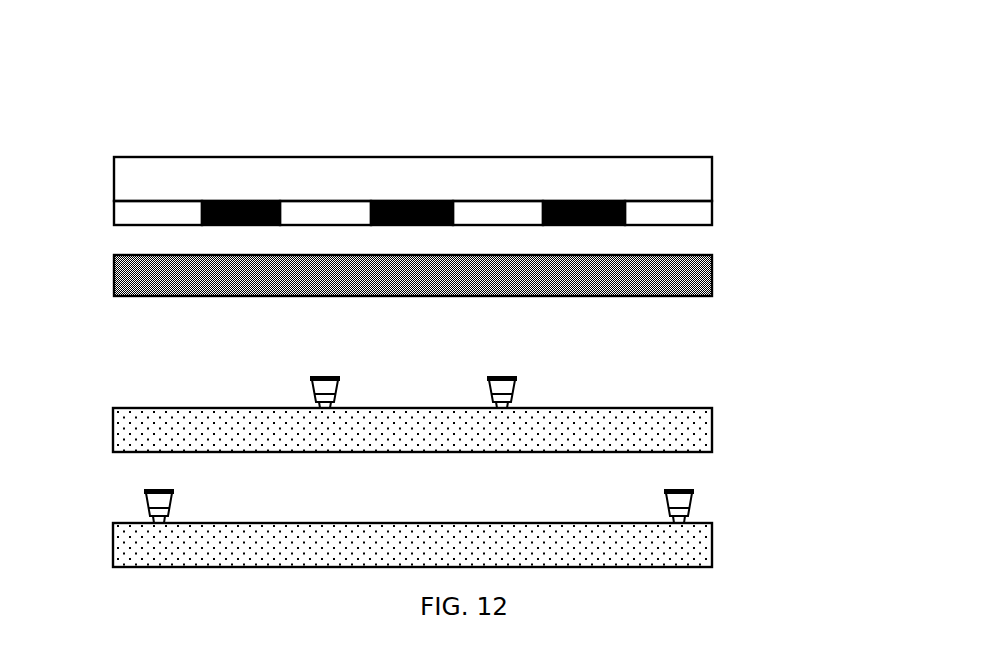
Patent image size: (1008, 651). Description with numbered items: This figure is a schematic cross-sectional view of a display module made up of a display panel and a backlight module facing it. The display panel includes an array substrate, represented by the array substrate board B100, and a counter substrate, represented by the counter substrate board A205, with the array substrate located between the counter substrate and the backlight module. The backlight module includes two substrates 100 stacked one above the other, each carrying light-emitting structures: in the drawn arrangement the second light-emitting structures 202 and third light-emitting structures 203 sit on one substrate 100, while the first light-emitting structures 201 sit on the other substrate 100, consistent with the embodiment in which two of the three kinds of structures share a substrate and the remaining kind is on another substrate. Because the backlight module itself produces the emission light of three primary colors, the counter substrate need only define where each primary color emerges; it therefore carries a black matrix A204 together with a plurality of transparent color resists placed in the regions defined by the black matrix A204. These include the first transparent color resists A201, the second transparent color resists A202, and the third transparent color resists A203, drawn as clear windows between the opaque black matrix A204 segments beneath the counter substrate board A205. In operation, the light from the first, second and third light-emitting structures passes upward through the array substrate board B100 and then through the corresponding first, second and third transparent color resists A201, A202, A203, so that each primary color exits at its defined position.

The first transparent color resist A201 is at (159, 213).
The second transparent color resist A202 is at (324, 213).
The third transparent color resist A203 is at (482, 217).
The black matrix A204 is at (605, 224).
The counter substrate board A205 is at (700, 173).
The array substrate board B100 is at (600, 271).
The substrate 100 is at (705, 428).
The first light-emitting structure 201 is at (146, 500).
The second light-emitting structure 202 is at (311, 378).
The third light-emitting structure 203 is at (488, 378).